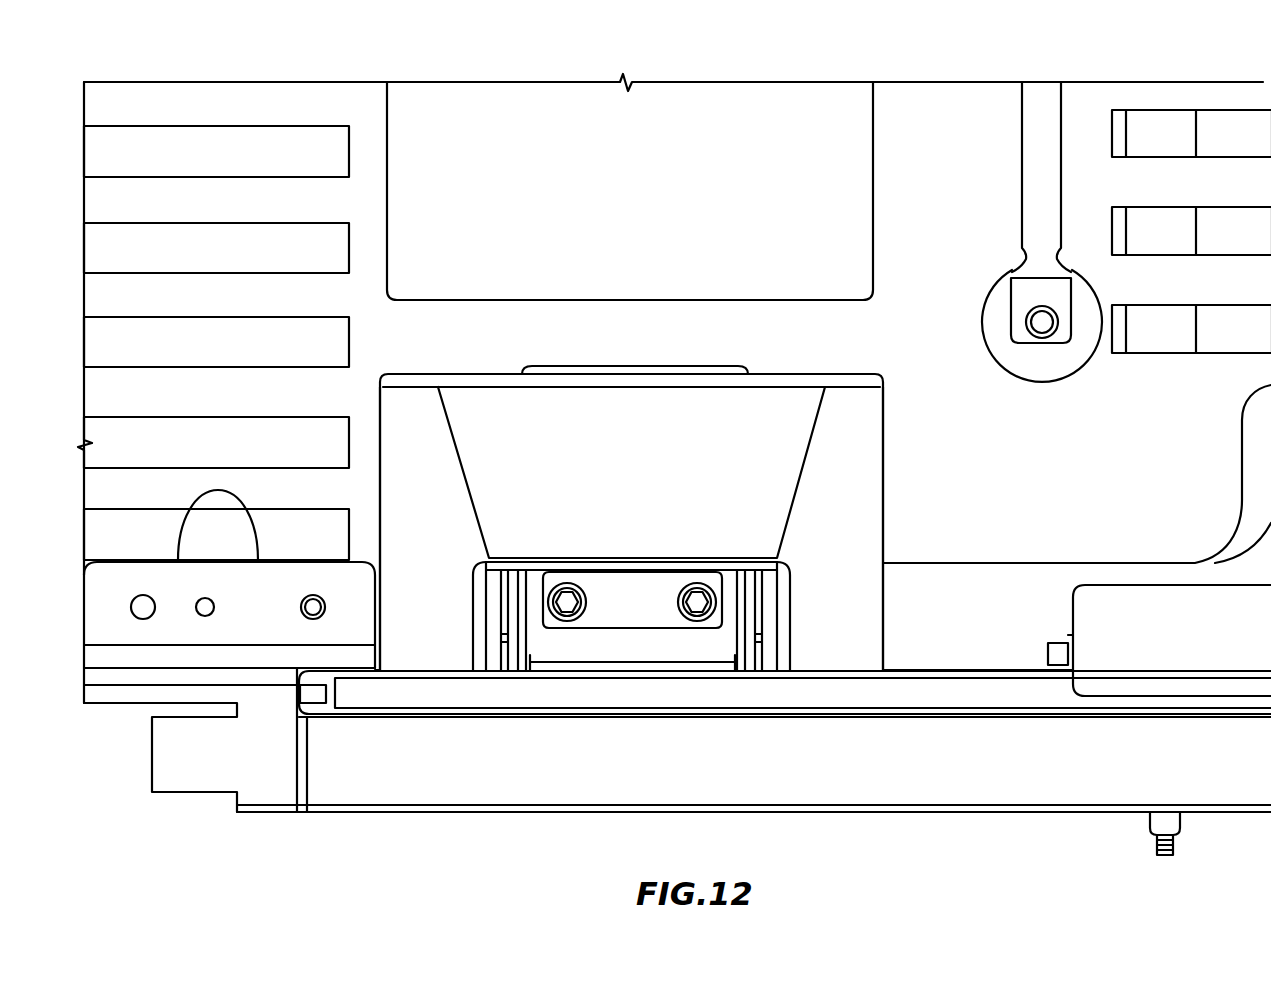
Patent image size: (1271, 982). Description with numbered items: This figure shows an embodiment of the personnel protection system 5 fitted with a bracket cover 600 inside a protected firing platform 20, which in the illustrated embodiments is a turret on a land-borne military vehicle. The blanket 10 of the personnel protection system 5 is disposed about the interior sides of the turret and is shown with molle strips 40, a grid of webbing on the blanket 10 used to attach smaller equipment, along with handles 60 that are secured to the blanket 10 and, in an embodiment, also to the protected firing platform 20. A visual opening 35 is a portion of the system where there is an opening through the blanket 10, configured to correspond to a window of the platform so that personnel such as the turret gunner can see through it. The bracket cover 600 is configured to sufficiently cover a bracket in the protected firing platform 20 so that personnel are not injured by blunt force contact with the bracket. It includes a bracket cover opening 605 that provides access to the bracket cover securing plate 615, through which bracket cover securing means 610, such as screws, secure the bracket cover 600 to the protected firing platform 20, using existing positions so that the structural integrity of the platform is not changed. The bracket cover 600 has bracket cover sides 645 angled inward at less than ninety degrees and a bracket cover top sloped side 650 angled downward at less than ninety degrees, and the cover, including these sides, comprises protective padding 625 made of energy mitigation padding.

The personnel protection system 5 is at (1063, 820).
The blanket 10 is at (992, 92).
The protected firing platform 20 is at (370, 813).
The visual opening 35 is at (830, 163).
The molle strips 40 is at (323, 318).
The handles 60 is at (1030, 180).
The bracket cover 600 is at (866, 672).
The bracket cover opening 605 is at (768, 658).
The bracket cover securing means 610 is at (567, 622).
The bracket cover securing plate 615 is at (675, 648).
The protective padding 625 is at (766, 422).
The bracket cover sides 645 is at (413, 488).
The bracket cover top sloped side 650 is at (486, 403).